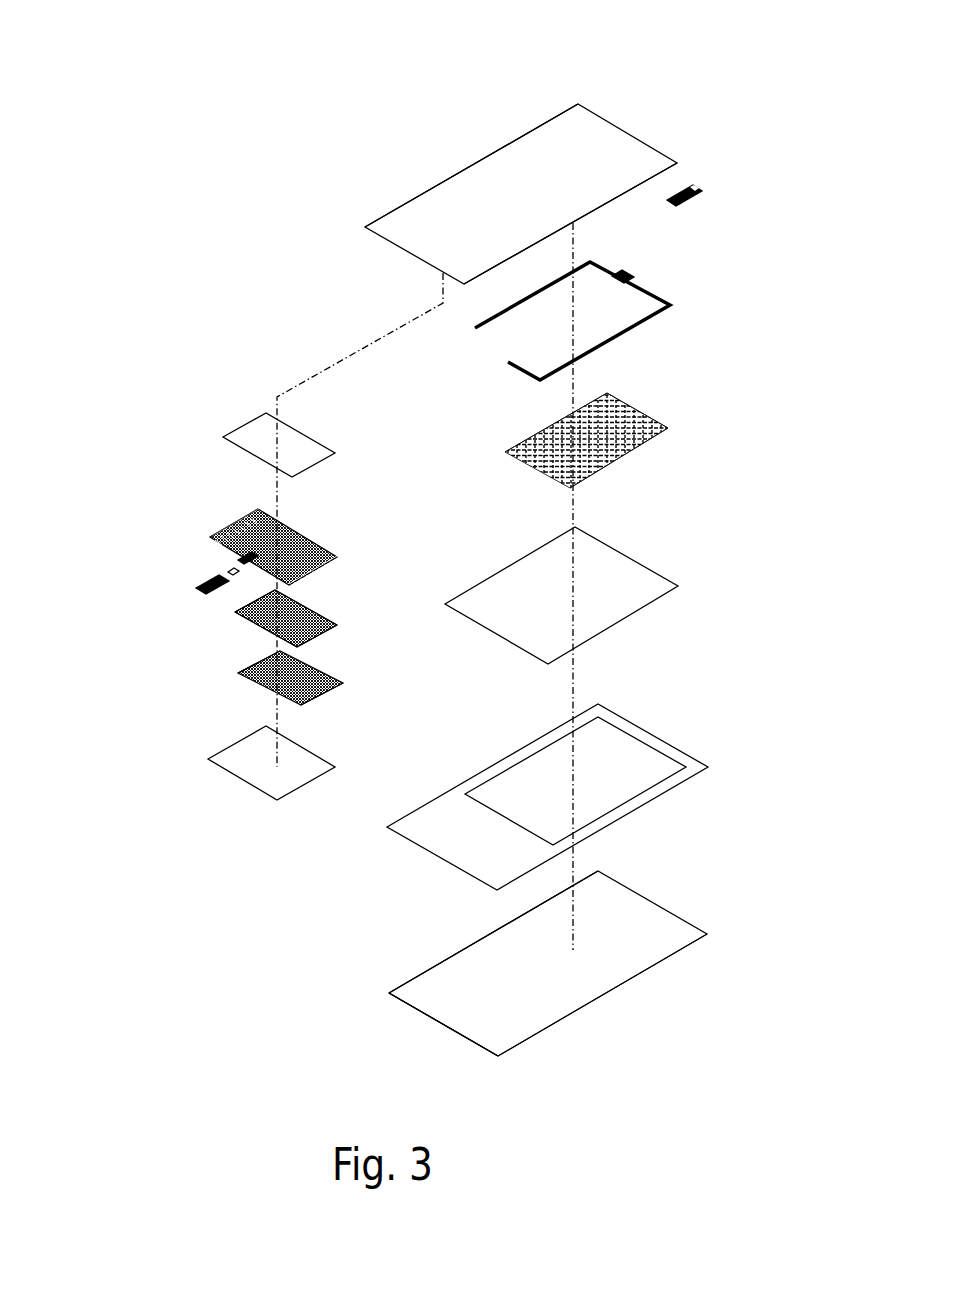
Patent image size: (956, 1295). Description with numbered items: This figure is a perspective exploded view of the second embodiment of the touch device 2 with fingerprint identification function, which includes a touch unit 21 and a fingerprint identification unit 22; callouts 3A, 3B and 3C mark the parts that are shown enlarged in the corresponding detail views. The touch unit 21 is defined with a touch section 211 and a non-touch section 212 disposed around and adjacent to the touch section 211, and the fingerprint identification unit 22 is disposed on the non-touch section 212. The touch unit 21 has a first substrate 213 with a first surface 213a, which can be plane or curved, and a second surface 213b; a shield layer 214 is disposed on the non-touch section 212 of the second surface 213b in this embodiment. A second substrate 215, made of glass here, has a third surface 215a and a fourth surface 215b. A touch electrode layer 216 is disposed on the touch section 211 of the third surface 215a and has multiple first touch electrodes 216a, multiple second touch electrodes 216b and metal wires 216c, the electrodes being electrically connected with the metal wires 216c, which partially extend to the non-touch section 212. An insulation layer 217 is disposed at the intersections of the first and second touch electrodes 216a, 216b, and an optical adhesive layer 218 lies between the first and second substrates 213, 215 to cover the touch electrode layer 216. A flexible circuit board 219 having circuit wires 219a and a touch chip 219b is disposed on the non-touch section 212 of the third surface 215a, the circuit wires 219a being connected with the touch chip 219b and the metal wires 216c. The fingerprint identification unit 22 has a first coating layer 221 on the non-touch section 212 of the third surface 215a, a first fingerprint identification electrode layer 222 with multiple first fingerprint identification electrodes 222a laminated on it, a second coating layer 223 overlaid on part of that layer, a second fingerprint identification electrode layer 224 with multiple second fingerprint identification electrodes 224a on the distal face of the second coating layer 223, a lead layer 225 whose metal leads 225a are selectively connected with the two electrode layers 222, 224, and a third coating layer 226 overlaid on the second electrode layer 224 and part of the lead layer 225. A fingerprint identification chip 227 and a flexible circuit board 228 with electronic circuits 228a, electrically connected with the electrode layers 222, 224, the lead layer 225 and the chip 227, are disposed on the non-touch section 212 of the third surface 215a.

The touch device with fingerprint identification function 2 is at (150, 124).
The touch unit 21 is at (803, 118).
The fingerprint identification unit 22 is at (145, 403).
The touch section 211 is at (490, 990).
The non-touch section 212 is at (420, 1002).
The first substrate 213 is at (582, 1098).
The first surface 213a is at (523, 1045).
The second surface 213b is at (560, 1003).
The shield layer 214 is at (541, 745).
The second substrate 215 is at (661, 38).
The third surface 215a is at (655, 182).
The fourth surface 215b is at (607, 158).
The touch electrode layer 216 is at (724, 446).
The first touch electrodes 216a is at (650, 440).
The second touch electrodes 216b is at (672, 430).
The metal wires 216c is at (672, 305).
The insulation layer 217 is at (648, 420).
The optical adhesive layer 218 is at (600, 610).
The flexible circuit board 219 is at (755, 183).
The circuit wires 219a is at (686, 206).
The touch chip 219b is at (696, 195).
The first coating layer 221 is at (255, 439).
The first fingerprint identification electrode layer 222 is at (405, 525).
The first fingerprint identification electrodes 222a is at (335, 558).
The second coating layer 223 is at (325, 635).
The second fingerprint identification electrode layer 224 is at (362, 702).
The second fingerprint identification electrodes 224a is at (300, 710).
The lead layer 225 is at (405, 594).
The metal leads 225a is at (300, 585).
The third coating layer 226 is at (232, 752).
The fingerprint identification chip 227 is at (235, 562).
The flexible circuit board 228 is at (200, 585).
The electronic circuits 228a is at (225, 573).
The enlarged view of a part of the second embodiment 3A is at (227, 527).
The enlarged view of another part of the second embodiment 3B is at (255, 667).
The enlarged view of still another part of the second embodiment 3C is at (248, 603).